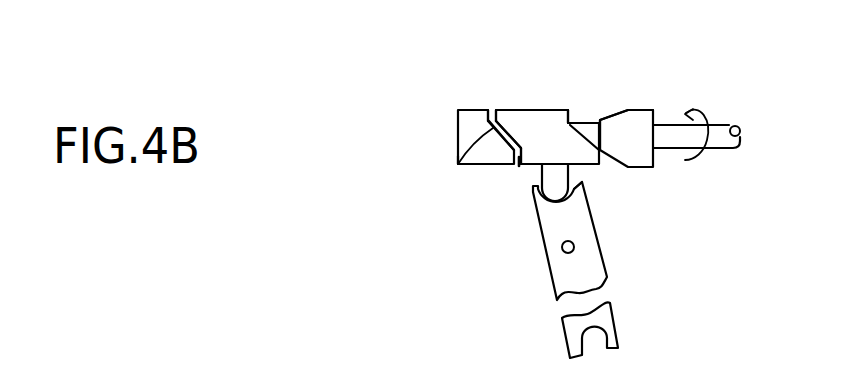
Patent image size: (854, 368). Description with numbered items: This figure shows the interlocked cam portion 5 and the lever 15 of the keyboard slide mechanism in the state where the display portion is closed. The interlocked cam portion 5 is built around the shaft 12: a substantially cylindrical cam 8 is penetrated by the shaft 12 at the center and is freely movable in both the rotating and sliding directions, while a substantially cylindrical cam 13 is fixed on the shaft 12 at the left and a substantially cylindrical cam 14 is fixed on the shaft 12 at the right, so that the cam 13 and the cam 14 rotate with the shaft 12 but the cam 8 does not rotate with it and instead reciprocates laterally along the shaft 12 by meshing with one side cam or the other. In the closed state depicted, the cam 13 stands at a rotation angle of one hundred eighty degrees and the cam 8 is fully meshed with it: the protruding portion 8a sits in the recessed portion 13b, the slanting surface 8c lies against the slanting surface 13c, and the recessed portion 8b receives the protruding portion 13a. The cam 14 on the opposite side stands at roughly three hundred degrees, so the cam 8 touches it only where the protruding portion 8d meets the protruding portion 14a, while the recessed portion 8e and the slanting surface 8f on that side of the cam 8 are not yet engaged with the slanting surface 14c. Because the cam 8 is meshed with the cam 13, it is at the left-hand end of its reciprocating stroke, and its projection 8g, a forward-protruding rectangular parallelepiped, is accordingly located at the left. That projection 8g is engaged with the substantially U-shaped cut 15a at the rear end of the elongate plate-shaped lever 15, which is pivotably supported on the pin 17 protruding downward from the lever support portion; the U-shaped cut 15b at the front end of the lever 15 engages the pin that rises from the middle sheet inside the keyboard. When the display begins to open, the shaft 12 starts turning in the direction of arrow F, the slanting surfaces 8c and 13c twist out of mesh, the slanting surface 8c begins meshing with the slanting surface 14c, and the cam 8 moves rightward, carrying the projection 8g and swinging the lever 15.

The interlocked cam portion 5 is at (428, 139).
The cam 8 is at (537, 126).
The protruding portion 8a is at (497, 118).
The recessed portion 8b is at (522, 166).
The slanting surface 8c is at (517, 126).
The protruding portion 8d is at (598, 165).
The recessed portion 8e is at (577, 137).
The slanting surface 8f is at (557, 126).
The projection 8g is at (539, 183).
The shaft 12 is at (720, 130).
The cam 13 is at (468, 123).
The protruding portion 13a is at (505, 156).
The recessed portion 13b is at (488, 118).
The slanting surface 13c is at (458, 165).
The cam 14 is at (640, 122).
The protruding portion 14a is at (599, 118).
The slanting surface 14c is at (622, 110).
The lever 15 is at (588, 262).
The U-shaped cut 15a is at (588, 205).
The U-shaped cut 15b is at (607, 331).
The pin 17 is at (563, 250).
The arrow F is at (703, 162).